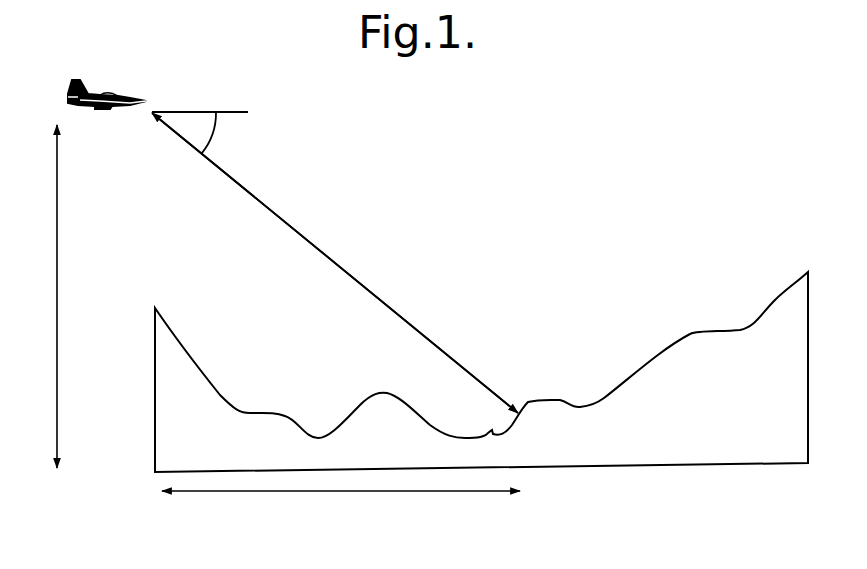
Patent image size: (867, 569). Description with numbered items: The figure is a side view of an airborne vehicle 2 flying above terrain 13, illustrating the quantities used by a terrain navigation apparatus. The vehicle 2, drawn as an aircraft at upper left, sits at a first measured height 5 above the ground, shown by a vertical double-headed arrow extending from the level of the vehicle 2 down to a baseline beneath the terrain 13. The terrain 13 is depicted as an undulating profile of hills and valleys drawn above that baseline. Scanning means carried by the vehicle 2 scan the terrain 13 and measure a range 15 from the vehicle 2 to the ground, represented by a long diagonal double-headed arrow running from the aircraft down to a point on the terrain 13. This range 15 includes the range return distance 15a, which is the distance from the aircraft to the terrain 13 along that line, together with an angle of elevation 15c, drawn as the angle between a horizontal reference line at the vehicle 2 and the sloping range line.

The vehicle 2 is at (106, 93).
The first measured height 5 is at (57, 250).
The terrain 13 is at (627, 374).
The range 15 is at (277, 227).
The range return distance 15a is at (330, 256).
The angle of elevation 15c is at (216, 137).